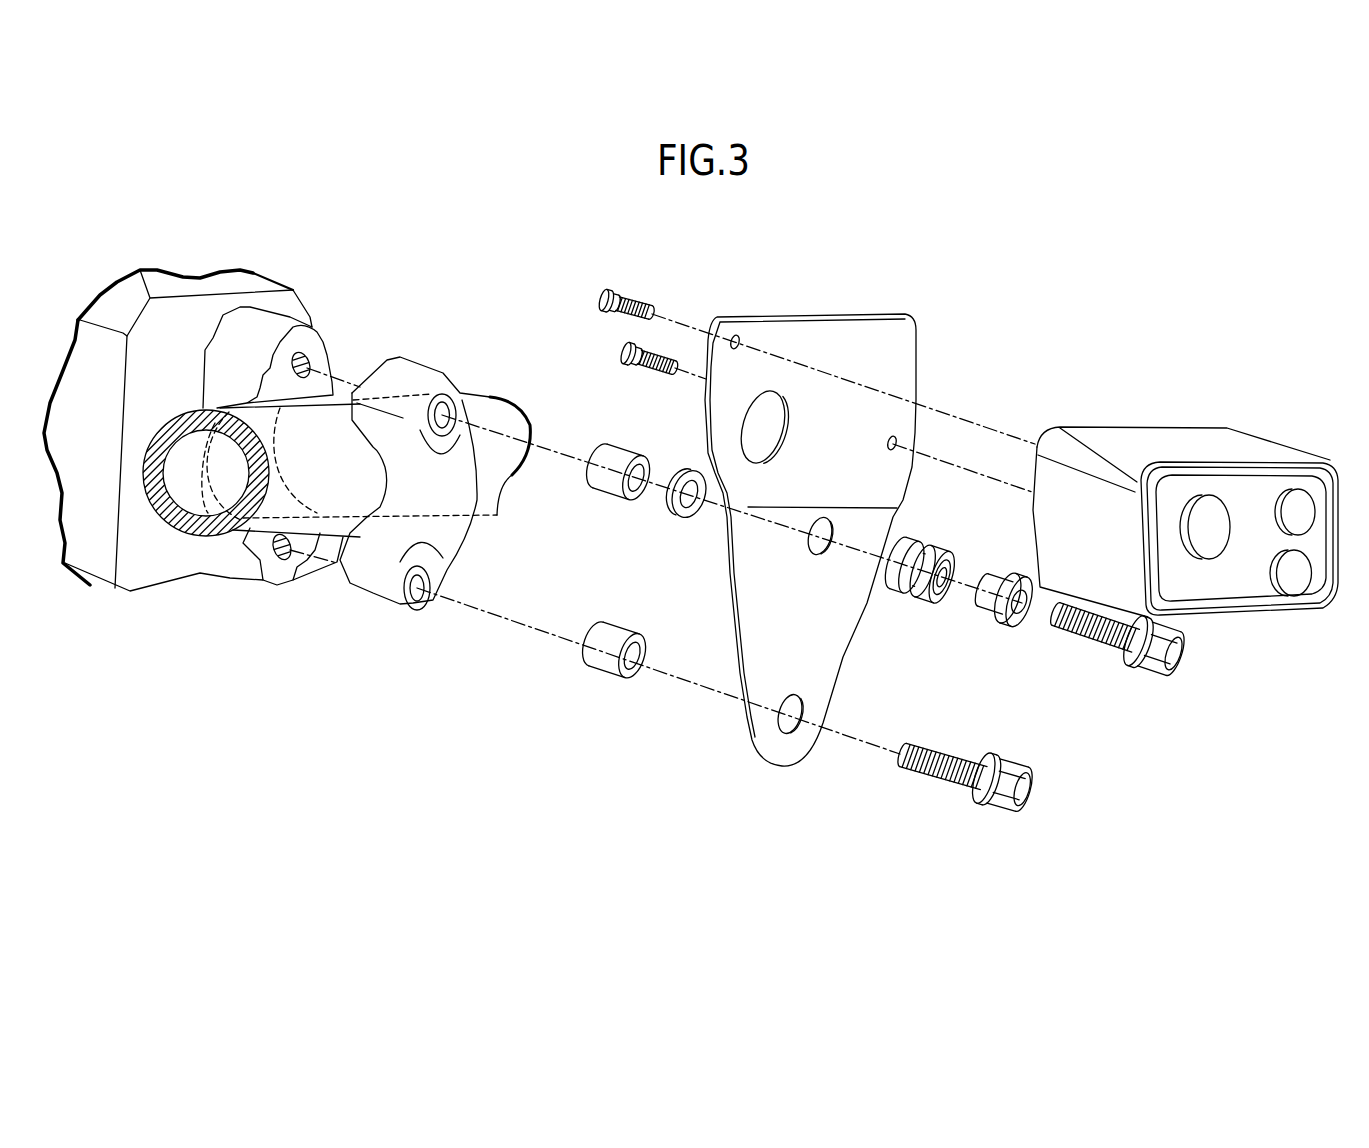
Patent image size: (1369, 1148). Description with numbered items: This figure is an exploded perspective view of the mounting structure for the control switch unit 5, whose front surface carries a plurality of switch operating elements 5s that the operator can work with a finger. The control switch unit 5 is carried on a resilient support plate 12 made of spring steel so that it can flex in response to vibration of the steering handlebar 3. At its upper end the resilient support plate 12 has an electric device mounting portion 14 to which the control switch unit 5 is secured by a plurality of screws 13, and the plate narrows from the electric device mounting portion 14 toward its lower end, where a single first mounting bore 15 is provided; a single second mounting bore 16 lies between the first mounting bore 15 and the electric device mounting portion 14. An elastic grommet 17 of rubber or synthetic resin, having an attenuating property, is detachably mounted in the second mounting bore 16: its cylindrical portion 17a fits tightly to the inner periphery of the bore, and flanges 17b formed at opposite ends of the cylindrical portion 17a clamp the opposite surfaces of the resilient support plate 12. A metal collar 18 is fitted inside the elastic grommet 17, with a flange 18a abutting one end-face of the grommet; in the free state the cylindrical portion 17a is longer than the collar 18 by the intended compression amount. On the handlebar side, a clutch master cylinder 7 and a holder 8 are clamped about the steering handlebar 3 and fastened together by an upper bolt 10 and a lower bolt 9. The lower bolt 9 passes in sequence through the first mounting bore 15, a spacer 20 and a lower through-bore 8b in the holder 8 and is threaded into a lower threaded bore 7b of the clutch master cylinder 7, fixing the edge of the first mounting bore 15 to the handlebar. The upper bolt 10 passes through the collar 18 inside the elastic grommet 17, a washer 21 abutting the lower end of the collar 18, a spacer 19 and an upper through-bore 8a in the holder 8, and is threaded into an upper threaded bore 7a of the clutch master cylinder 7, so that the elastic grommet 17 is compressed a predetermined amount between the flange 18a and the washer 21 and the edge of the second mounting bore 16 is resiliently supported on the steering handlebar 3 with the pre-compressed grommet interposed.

The steering handlebar 3 is at (338, 407).
The control switch unit 5 is at (1192, 488).
The switch operating elements 5s is at (1297, 570).
The clutch master cylinder 7 is at (209, 458).
The upper threaded bore 7a is at (308, 352).
The lower threaded bore 7b is at (287, 560).
The holder 8 is at (435, 486).
The upper through-bore 8a is at (443, 405).
The lower through-bore 8b is at (420, 597).
The lower bolt 9 is at (1012, 790).
The upper bolt 10 is at (1170, 660).
The resilient support plate 12 is at (831, 518).
The screws 13 is at (624, 350).
The electric device mounting portion 14 is at (810, 518).
The first mounting bore 15 is at (800, 723).
The second mounting bore 16 is at (817, 547).
The elastic grommet 17 is at (906, 577).
The cylindrical portion 17a is at (925, 535).
The flanges 17b is at (919, 570).
The metal collar 18 is at (1025, 601).
The flange 18a is at (997, 583).
The spacer 19 is at (593, 480).
The spacer 20 is at (583, 660).
The washer 21 is at (687, 520).